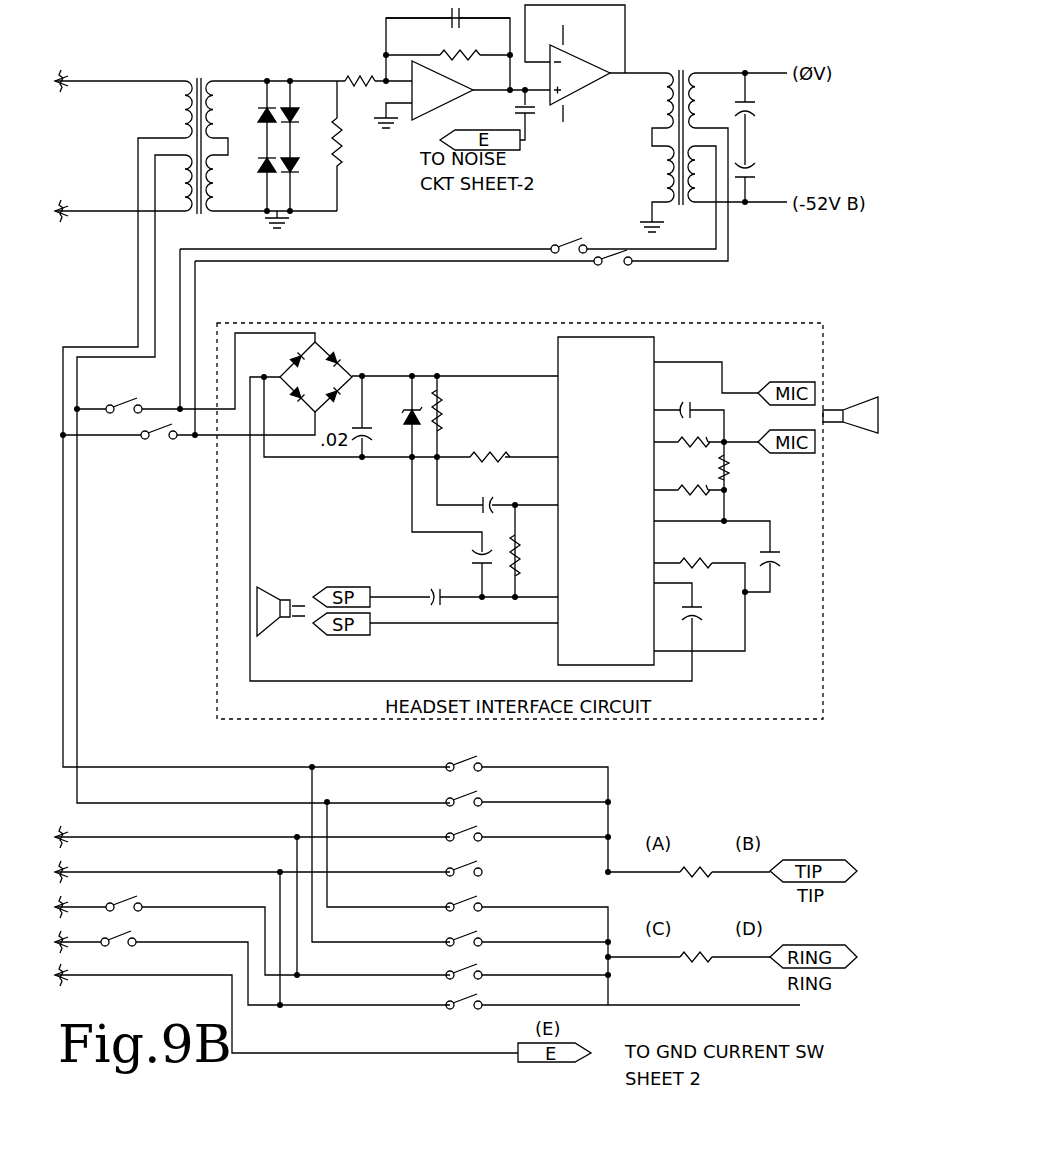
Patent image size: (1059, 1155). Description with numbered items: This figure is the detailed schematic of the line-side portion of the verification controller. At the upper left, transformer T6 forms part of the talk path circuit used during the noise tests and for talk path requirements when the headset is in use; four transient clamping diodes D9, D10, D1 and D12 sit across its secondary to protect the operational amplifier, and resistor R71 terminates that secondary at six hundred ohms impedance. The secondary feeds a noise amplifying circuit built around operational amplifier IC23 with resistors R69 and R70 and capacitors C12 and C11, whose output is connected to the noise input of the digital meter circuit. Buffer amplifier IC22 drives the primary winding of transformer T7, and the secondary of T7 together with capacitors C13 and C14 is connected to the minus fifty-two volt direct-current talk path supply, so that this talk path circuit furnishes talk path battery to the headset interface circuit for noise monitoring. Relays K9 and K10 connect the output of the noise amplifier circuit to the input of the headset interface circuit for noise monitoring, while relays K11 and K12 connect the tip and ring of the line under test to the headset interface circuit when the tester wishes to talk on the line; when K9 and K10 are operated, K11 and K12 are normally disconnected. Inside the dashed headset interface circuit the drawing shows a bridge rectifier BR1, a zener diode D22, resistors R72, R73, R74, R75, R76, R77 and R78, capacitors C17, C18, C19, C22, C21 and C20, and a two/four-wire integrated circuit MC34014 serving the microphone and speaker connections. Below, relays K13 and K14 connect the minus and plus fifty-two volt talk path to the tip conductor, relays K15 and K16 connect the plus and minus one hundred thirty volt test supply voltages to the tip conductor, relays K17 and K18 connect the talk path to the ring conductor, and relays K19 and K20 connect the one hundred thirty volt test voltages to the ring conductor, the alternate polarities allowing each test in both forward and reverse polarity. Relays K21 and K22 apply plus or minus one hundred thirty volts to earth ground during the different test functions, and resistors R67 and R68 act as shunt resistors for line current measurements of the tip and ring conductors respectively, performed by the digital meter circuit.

The transformer T6 is at (170, 163).
The transformer T7 is at (679, 116).
The transient clamping diode D9 is at (257, 146).
The transient clamping diode D10 is at (306, 146).
The diode D1 is at (258, 174).
The transient clamping diode D12 is at (306, 176).
The terminating resistor R71 is at (355, 146).
The resistor R69 is at (359, 79).
The resistor R70 is at (434, 49).
The capacitor C12 is at (448, 26).
The capacitor C11 is at (503, 109).
The operational amplifier IC23 is at (443, 90).
The buffer amplifier IC22 is at (591, 77).
The capacitor C13 is at (765, 119).
The capacitor C14 is at (765, 168).
The relay K9 is at (578, 226).
The relay K10 is at (615, 280).
The relay K11 is at (133, 388).
The relay K12 is at (162, 451).
The bridge rectifier BR1 is at (316, 377).
The zener diode 18V D22 is at (395, 422).
The resistor 150K R72 is at (462, 406).
The resistor 10K R73 is at (490, 457).
The resistor 33K R74 is at (533, 558).
The capacitor .05 C17 is at (468, 504).
The capacitor .05 C18 is at (463, 557).
The capacitor 10uF C19 is at (411, 611).
The 2/4 wire telephone speech IC MC34014 is at (606, 501).
The capacitor .05 C22 is at (689, 391).
The resistor 10K R75 is at (696, 443).
The resistor 500 R76 is at (743, 468).
The resistor 200 R77 is at (696, 491).
The resistor 47 1/2W R78 is at (721, 545).
The capacitor 2uF C21 is at (790, 557).
The capacitor .2 C20 is at (710, 616).
The relay K14 is at (435, 756).
The relay K13 is at (435, 791).
The relay K15 is at (435, 826).
The relay contact T-130V(-) K16 is at (435, 861).
The relay K17 is at (436, 896).
The relay K18 is at (436, 931).
The relay K19 is at (436, 964).
The relay K20 is at (436, 994).
The relay K21 is at (174, 895).
The relay K22 is at (164, 930).
The shunt resistor R67 is at (699, 871).
The shunt resistor R68 is at (699, 956).